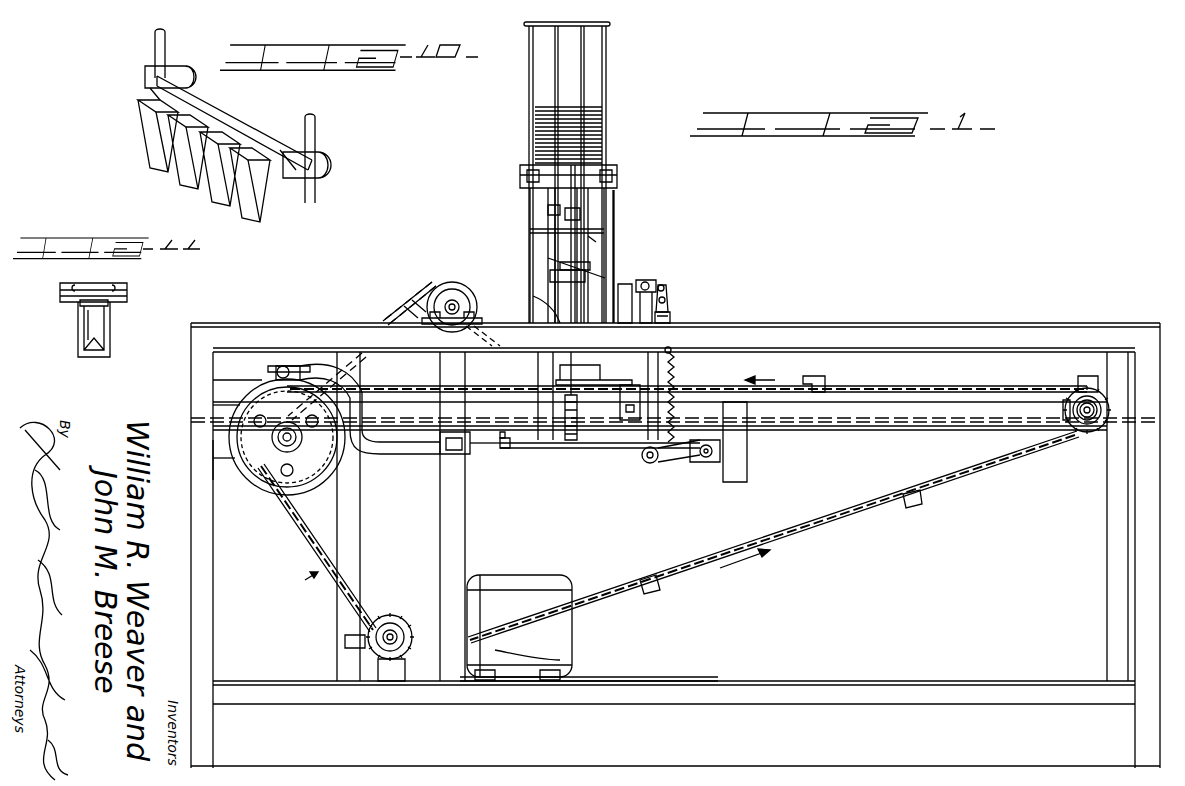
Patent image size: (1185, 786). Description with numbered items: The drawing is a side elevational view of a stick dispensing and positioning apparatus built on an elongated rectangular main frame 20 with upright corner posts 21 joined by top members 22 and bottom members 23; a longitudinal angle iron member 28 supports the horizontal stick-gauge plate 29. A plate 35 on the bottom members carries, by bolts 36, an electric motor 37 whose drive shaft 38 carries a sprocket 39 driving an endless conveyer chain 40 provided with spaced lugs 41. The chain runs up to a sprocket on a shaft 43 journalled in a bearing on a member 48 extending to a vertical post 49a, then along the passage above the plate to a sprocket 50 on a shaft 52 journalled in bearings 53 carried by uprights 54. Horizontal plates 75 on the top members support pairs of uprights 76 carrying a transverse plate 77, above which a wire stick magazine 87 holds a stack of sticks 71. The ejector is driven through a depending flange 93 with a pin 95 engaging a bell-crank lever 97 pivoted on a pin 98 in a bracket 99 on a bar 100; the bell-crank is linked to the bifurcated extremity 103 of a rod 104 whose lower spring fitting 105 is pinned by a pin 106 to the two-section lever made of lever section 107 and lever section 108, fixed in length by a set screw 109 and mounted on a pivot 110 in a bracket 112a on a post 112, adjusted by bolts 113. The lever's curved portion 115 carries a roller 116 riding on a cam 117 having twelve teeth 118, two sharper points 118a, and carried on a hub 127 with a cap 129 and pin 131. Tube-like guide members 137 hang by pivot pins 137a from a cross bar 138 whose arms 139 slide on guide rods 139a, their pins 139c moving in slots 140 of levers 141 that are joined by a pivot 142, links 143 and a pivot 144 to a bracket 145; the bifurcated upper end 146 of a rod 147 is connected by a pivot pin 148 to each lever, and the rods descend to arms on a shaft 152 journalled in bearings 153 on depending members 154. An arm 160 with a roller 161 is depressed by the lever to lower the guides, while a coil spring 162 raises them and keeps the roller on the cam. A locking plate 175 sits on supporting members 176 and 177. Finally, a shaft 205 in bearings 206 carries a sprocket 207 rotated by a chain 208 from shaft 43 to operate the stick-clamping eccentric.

In FIG. 1, the main frame 20 is at (1122, 706).
In FIG. 1, the upright corner posts 21 is at (262, 652).
In FIG. 1, the top members 22 is at (1000, 332).
In FIG. 1, the bottom members 23 is at (938, 690).
In FIG. 1, the angle iron member 28 is at (910, 405).
In FIG. 1, the stick-gauge plate 29 is at (850, 432).
In FIG. 1, the plate 35 is at (660, 678).
In FIG. 1, the bolts 36 is at (572, 658).
In FIG. 1, the electric motor 37 is at (530, 586).
In FIG. 1, the drive shaft 38 is at (390, 650).
In FIG. 1, the sprocket 39 is at (405, 652).
In FIG. 1, the endless conveyer chain 40 is at (948, 393).
In FIG. 1, the lugs 41 is at (286, 366).
In FIG. 1, the shaft 43 is at (248, 452).
In FIG. 1, the member 48 is at (213, 490).
In FIG. 1, the vertical post 49a is at (360, 562).
In FIG. 1, the sprocket 50 is at (1088, 432).
In FIG. 1, the shaft 52 is at (1066, 418).
In FIG. 1, the bearings 53 is at (1087, 398).
In FIG. 1, the uprights 54 is at (1107, 536).
In FIG. 1, the sticks 71 is at (535, 118).
In FIG. 1, the horizontal plates 75 is at (536, 323).
In FIG. 1, the uprights 76 is at (605, 250).
In FIG. 1, the horizontal plate 77 is at (600, 206).
In FIG. 1, the stick magazine 87 is at (605, 85).
In FIG. 1, the depending flange 93 is at (595, 176).
In FIG. 1, the pin 95 is at (614, 177).
In FIG. 1, the bell-crank lever 97 is at (525, 177).
In FIG. 1, the pin 98 is at (546, 210).
In FIG. 1, the bracket 99 is at (530, 232).
In FIG. 1, the bar 100 is at (598, 222).
In FIG. 1, the bifurcated extremity 103 is at (600, 242).
In FIG. 1, the rod 104 is at (595, 278).
In FIG. 1, the spring fitting 105 is at (580, 436).
In FIG. 1, the pin 106 is at (571, 450).
In FIG. 1, the lever section 107 is at (548, 450).
In FIG. 1, the lever section 108 is at (492, 452).
In FIG. 1, the set screw 109 is at (504, 452).
In FIG. 1, the pivot 110 is at (452, 456).
In FIG. 1, the post 112 is at (466, 538).
In FIG. 1, the bracket 112a is at (440, 452).
In FIG. 1, the bolts 113 is at (425, 446).
In FIG. 1, the curved portion 115 is at (340, 366).
In FIG. 1, the roller 116 is at (292, 365).
In FIG. 1, the cam 117 is at (290, 482).
In FIG. 1, the teeth 118 is at (246, 482).
In FIG. 1, the points 118a is at (268, 368).
In FIG. 1, the hub 127 is at (302, 485).
In FIG. 1, the cap 129 is at (240, 402).
In FIG. 1, the pin 131 is at (232, 382).
In FIG. 10, the guide members 137 is at (150, 138).
In FIG. 11, the guide members 137 is at (78, 336).
In FIG. 10, the pivot pins 137a is at (228, 132).
In FIG. 11, the pivot pins 137a is at (86, 302).
In FIG. 10, the cross bar 138 is at (222, 125).
In FIG. 11, the cross bar 138 is at (60, 295).
In FIG. 1, the arms 139 is at (592, 266).
In FIG. 10, the arms 139 is at (152, 92).
In FIG. 10, the guide rods 139a is at (153, 50).
In FIG. 10, the pins 139c is at (145, 72).
In FIG. 1, the slots 140 is at (548, 280).
In FIG. 1, the levers 141 is at (657, 283).
In FIG. 1, the pivot 142 is at (670, 284).
In FIG. 1, the links 143 is at (668, 298).
In FIG. 1, the pivot 144 is at (713, 294).
In FIG. 1, the bracket 145 is at (672, 315).
In FIG. 1, the bifurcated upper end 146 is at (627, 303).
In FIG. 1, the rod 147 is at (668, 350).
In FIG. 1, the pivot pin 148 is at (660, 282).
In FIG. 1, the shaft 152 is at (710, 462).
In FIG. 1, the bearings 153 is at (695, 466).
In FIG. 1, the depending members 154 is at (748, 452).
In FIG. 1, the arm 160 is at (675, 462).
In FIG. 1, the roller 161 is at (644, 463).
In FIG. 1, the coil spring 162 is at (678, 372).
In FIG. 1, the plate 175 is at (606, 390).
In FIG. 1, the supporting member 176 is at (630, 392).
In FIG. 1, the supporting member 177 is at (540, 410).
In FIG. 1, the shaft 205 is at (453, 296).
In FIG. 1, the bearings 206 is at (455, 326).
In FIG. 1, the sprocket 207 is at (416, 292).
In FIG. 1, the chain 208 is at (400, 312).